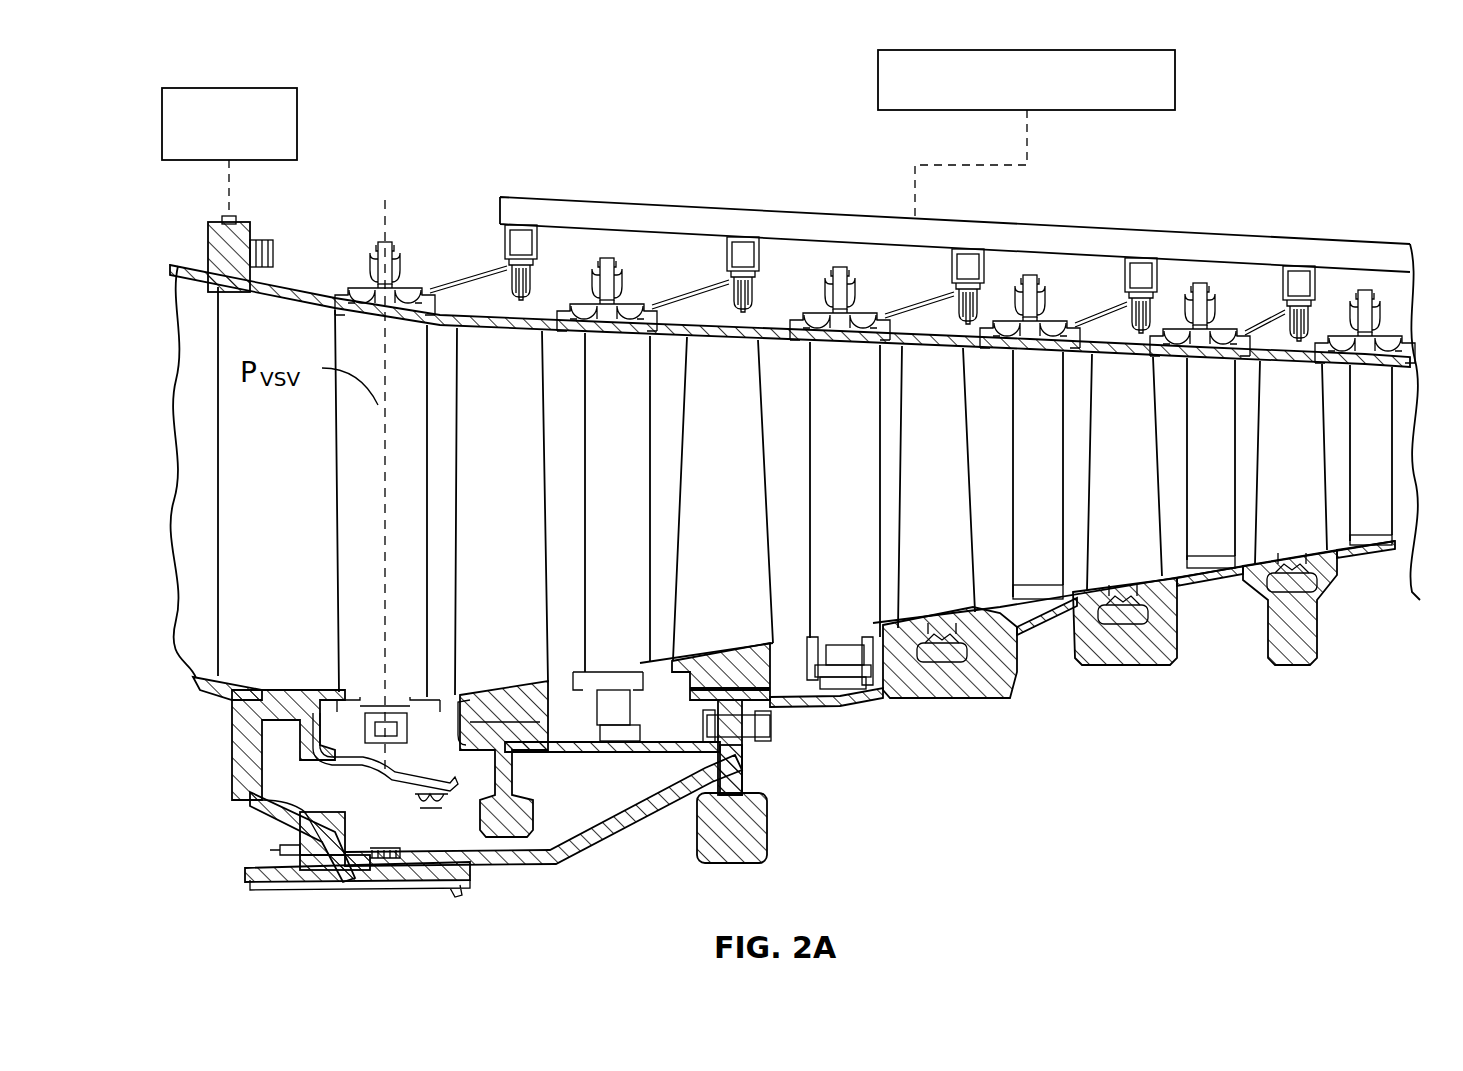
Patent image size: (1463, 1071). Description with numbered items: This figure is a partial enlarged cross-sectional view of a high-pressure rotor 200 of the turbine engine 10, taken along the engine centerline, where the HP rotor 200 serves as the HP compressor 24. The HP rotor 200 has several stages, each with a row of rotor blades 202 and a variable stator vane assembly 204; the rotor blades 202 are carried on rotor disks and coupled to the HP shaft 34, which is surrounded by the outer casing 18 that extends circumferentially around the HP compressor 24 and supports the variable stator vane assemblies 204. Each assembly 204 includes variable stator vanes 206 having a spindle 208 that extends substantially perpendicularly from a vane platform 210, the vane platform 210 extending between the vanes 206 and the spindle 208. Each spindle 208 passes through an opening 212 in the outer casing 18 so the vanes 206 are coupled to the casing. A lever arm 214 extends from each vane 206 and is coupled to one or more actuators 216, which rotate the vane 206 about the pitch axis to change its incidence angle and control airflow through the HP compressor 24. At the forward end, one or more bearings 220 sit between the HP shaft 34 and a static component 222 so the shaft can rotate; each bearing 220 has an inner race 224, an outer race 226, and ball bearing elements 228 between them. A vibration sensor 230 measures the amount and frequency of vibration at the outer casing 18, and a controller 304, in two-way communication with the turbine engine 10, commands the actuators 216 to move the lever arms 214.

The turbine engine 10 is at (150, 78).
The outer casing 18 is at (205, 240).
The HP compressor 24 is at (668, 130).
The HP shaft 34 is at (545, 868).
The HP rotor 200 is at (510, 125).
The rotor blades 202 is at (525, 620).
The variable stator vane assembly 204 is at (381, 212).
The variable stator vane 206 is at (410, 505).
The spindle 208 is at (377, 244).
The vane platform 210 is at (338, 294).
The opening 212 is at (408, 296).
The lever arm 214 is at (489, 258).
The actuator 216 is at (712, 228).
The bearing 220 is at (268, 838).
The static component 222 is at (240, 800).
The inner race 224 is at (310, 880).
The outer race 226 is at (300, 800).
The bearing elements 228 is at (318, 868).
The vibration sensor 230 is at (297, 125).
The controller 304 is at (1175, 80).